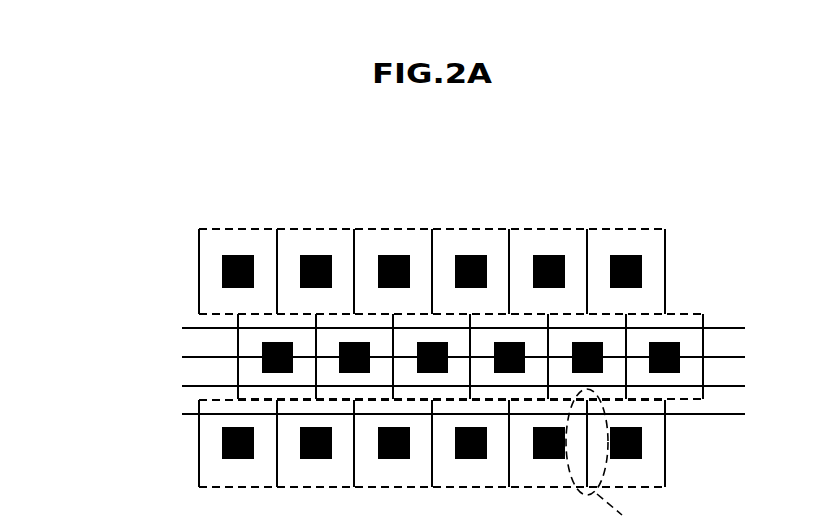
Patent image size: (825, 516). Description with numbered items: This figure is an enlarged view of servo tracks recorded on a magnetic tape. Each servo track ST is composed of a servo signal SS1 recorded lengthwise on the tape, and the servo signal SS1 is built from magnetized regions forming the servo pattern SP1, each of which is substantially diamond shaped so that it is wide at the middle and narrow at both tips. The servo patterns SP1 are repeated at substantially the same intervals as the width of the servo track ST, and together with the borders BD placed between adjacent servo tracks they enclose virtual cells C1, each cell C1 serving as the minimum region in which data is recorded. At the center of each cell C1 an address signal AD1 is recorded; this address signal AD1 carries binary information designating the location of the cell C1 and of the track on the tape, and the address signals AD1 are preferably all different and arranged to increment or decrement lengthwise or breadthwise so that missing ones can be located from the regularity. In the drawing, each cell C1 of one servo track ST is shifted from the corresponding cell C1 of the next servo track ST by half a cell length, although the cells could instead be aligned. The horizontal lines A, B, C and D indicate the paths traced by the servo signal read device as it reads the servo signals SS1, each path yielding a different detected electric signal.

The servo pattern SP1 is at (503, 303).
The servo signal SS1 is at (354, 260).
The address signal AD1 is at (533, 265).
The cell C1 is at (373, 240).
The border BD is at (643, 229).
The servo track ST is at (185, 287).
The line A is at (723, 321).
The line B is at (723, 350).
The line C is at (723, 379).
The line D is at (723, 407).